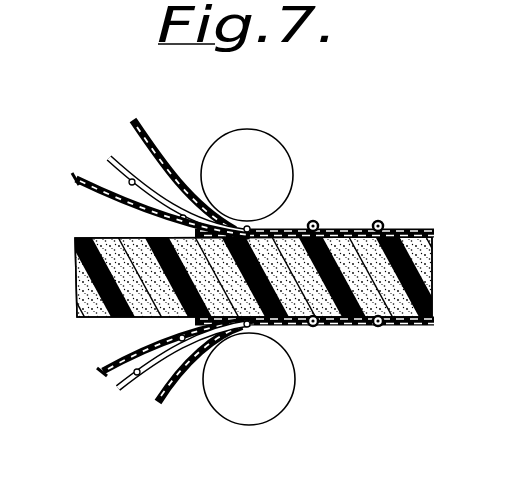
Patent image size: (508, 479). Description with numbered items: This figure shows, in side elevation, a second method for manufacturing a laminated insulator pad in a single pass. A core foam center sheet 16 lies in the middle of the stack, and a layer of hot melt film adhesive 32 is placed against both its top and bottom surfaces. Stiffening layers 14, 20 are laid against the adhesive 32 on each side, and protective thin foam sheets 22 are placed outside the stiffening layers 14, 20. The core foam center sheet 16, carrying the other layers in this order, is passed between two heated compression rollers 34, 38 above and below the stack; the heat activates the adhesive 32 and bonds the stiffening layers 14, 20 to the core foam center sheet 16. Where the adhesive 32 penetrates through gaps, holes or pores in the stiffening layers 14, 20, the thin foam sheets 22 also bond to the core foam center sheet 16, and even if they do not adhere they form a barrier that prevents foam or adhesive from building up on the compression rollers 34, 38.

The stiffening layer 14 is at (112, 156).
The core foam center sheet 16 is at (433, 313).
The stiffening layer 20 is at (138, 390).
The protective thin foam sheet 22 is at (147, 134).
The hot melt film adhesive 32 is at (73, 186).
The heated compression roller 34 is at (262, 163).
The heated compression roller 38 is at (255, 392).